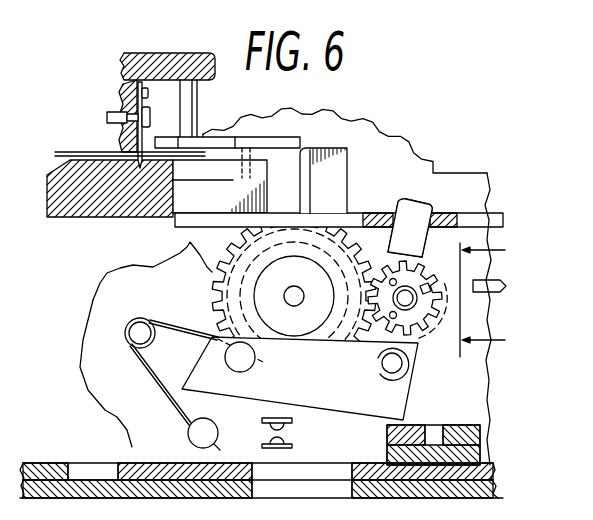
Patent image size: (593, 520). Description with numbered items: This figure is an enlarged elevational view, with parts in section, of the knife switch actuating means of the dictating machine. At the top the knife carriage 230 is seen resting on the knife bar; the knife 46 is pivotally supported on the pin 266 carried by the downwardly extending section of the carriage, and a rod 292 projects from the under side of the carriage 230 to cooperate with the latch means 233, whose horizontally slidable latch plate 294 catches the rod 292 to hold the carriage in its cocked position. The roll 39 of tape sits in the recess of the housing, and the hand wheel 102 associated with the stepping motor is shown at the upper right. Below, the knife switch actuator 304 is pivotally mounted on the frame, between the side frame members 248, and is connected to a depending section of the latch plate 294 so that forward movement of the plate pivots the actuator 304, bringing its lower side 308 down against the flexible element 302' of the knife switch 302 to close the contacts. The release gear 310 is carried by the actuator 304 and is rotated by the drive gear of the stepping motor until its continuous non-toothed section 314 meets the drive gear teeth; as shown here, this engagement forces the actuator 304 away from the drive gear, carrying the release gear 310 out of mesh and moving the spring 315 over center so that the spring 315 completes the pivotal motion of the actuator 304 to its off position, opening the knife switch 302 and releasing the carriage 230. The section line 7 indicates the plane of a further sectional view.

The rod 292 is at (214, 54).
The knife carriage 230 is at (118, 67).
The knife 46 is at (140, 90).
The pin 266 is at (112, 121).
The roll 39 is at (186, 157).
The latch means 233 is at (282, 134).
The hand wheel 102 is at (387, 150).
The latch plate 294 is at (343, 208).
The section line 7- 7 is at (490, 296).
The release gear 310 is at (377, 289).
The non-toothed section 314 is at (424, 345).
The knife switch actuator 304 is at (393, 395).
The side frame members 248 is at (490, 403).
The knife switch 302 is at (311, 439).
The flexible element 302' is at (305, 408).
The lower side 308 is at (207, 383).
The spring 315 is at (150, 371).